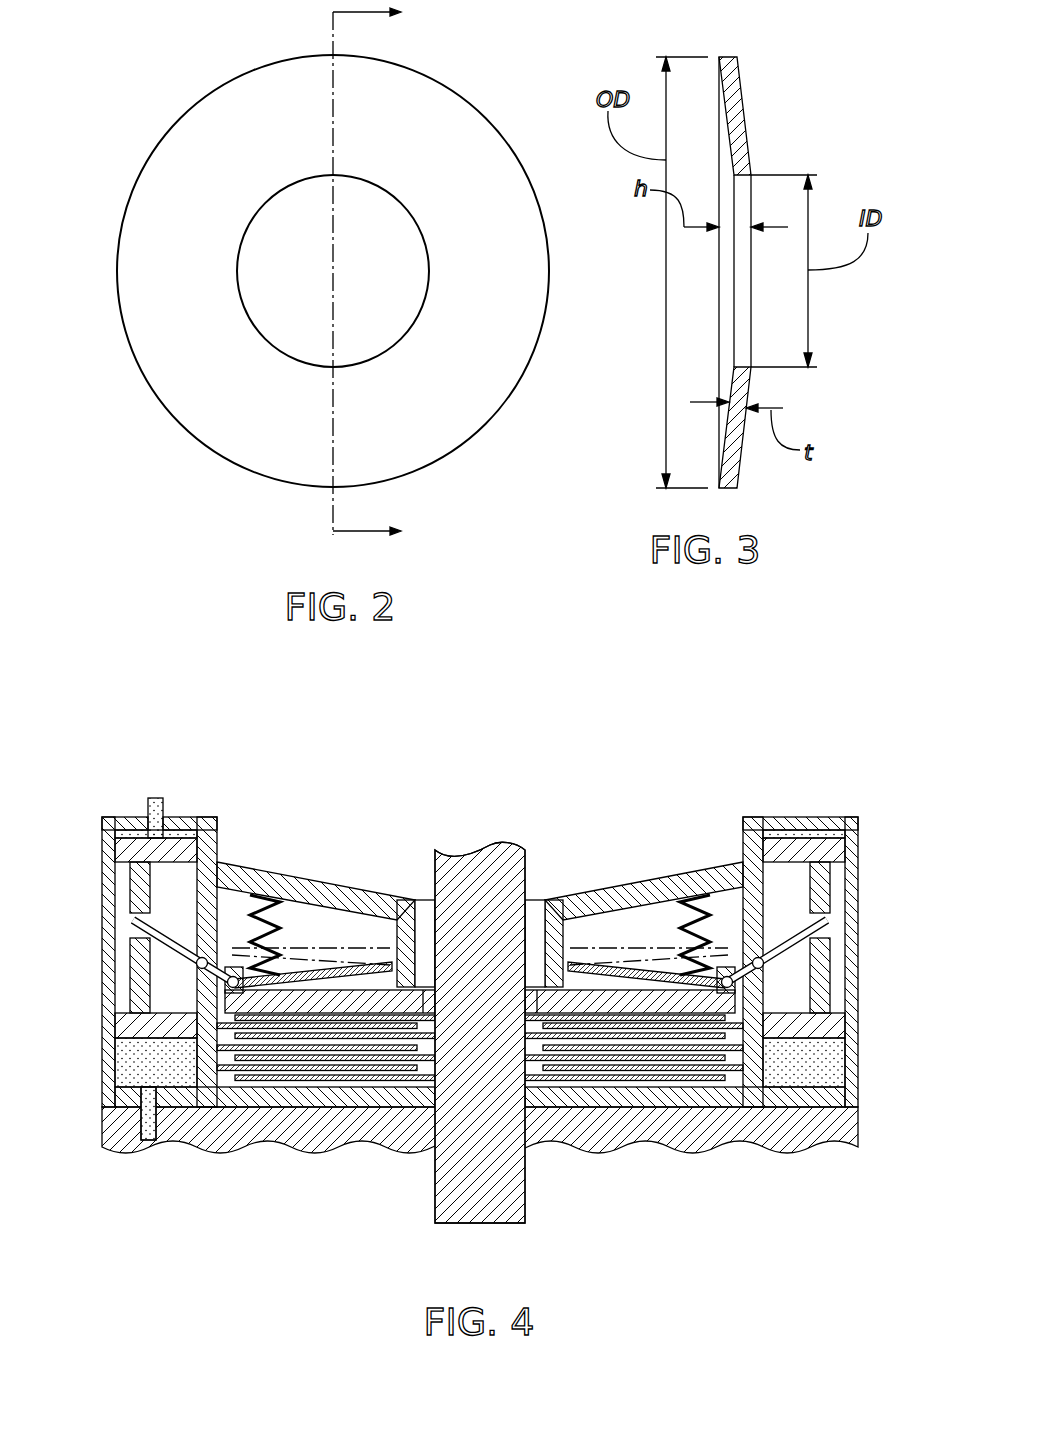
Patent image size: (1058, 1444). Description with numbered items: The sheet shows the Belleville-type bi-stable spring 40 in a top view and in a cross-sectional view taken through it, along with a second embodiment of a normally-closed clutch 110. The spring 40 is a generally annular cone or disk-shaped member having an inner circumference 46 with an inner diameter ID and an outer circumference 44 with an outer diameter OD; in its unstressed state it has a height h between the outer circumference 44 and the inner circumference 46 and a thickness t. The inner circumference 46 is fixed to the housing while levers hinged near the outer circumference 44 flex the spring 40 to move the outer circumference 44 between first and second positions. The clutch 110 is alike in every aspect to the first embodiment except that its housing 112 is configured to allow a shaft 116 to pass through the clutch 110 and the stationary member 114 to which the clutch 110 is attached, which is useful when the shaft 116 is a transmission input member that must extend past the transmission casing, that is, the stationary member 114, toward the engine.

In FIG. 2, the bi-stable spring 40 is at (326, 273).
In FIG. 3, the bi-stable spring 40 is at (742, 110).
In FIG. 2, the outer circumference 44 is at (180, 118).
In FIG. 2, the inner circumference 46 is at (258, 212).
In FIG. 4, the normally-closed clutch 110 is at (518, 970).
In FIG. 4, the housing 112 is at (858, 962).
In FIG. 4, the stationary member 114 is at (755, 1123).
In FIG. 4, the shaft 116 is at (527, 1177).